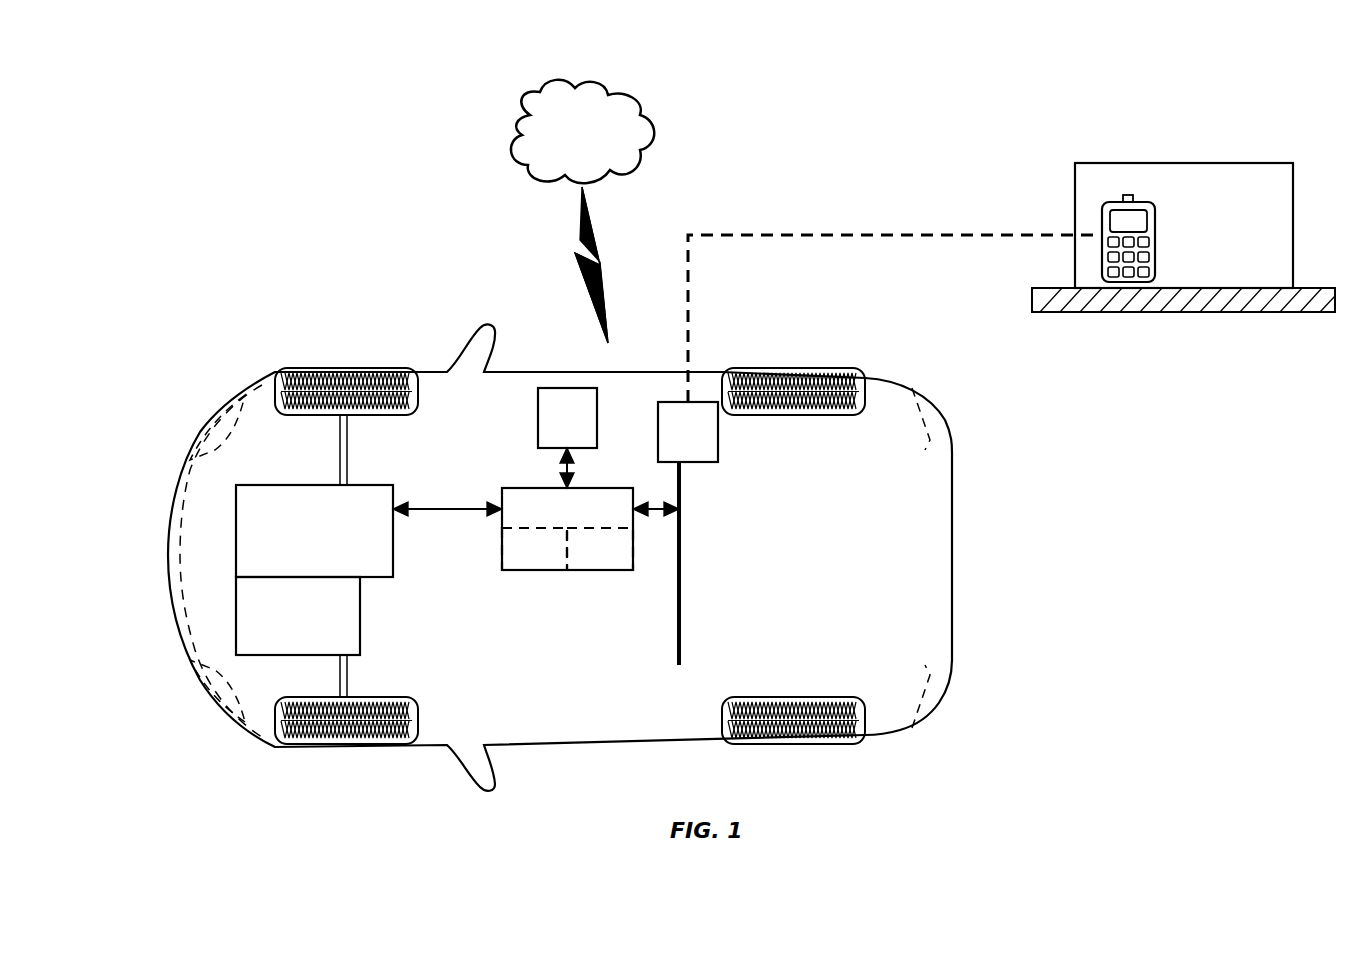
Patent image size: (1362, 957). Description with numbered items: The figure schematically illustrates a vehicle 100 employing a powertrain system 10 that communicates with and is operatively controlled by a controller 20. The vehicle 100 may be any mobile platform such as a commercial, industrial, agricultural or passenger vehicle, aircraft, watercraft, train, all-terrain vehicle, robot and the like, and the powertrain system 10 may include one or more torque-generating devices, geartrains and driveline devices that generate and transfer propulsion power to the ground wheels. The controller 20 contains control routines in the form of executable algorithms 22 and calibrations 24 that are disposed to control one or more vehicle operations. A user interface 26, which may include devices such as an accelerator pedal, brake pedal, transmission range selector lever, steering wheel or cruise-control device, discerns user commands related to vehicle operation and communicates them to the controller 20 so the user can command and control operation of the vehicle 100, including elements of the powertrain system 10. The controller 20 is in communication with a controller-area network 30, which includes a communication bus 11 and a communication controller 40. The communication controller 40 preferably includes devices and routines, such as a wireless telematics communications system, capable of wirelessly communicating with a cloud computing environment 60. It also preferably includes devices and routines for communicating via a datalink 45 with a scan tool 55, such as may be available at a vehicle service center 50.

The vehicle 100 is at (256, 368).
The powertrain system 10 is at (222, 576).
The communication bus 11 is at (677, 479).
The controller 20 is at (554, 523).
The executable algorithms 22 is at (587, 562).
The calibrations 24 is at (522, 562).
The user interface 26 is at (554, 430).
The controller-area network 30 is at (697, 492).
The communication controller 40 is at (675, 444).
The datalink 45 is at (860, 240).
The vehicle service center 50 is at (1196, 219).
The scan tool 55 is at (1160, 250).
The cloud computing environment 60 is at (570, 150).